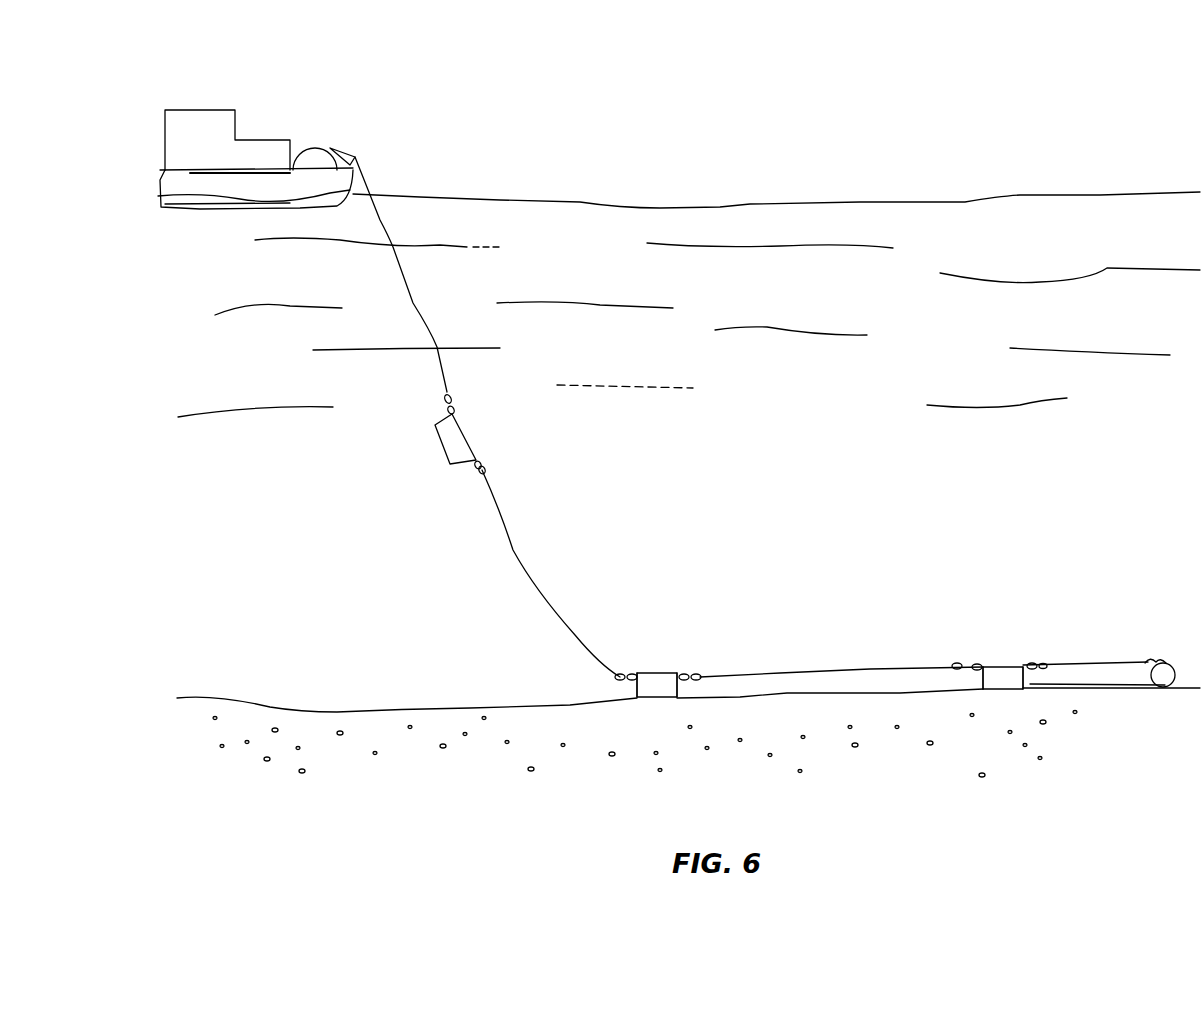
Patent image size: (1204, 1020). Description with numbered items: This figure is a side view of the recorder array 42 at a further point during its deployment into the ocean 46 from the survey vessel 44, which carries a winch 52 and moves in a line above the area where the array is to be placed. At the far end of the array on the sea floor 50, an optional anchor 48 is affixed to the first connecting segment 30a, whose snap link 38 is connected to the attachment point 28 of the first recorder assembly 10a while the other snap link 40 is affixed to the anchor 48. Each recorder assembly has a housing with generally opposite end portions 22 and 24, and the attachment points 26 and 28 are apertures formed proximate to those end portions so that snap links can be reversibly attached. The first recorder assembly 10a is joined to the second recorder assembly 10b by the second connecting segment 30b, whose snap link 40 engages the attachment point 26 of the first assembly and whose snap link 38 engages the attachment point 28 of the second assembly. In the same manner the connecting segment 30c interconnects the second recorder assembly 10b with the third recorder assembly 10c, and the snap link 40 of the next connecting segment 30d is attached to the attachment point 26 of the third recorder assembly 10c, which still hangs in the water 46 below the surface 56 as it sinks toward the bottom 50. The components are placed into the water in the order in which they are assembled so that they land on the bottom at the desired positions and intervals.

The first recorder assembly 10a is at (1003, 666).
The second recorder assembly 10b is at (655, 673).
The third recorder assembly 10c is at (458, 437).
The end portion 22 is at (636, 686).
The end portion 24 is at (680, 689).
The first attachment point 26 is at (452, 403).
The second attachment point 28 is at (485, 466).
The first connecting segment 30a is at (1105, 653).
The second connecting segment 30b is at (836, 655).
The connecting segment 30c is at (537, 551).
The connecting segment 30d is at (427, 301).
The snap link 38 is at (474, 471).
The snap link 40 is at (446, 410).
The recorder array 42 is at (735, 600).
The survey vessel 44 is at (205, 208).
The ocean 46 is at (845, 424).
The anchor 48 is at (1162, 688).
The sea floor 50 is at (423, 710).
The winch 52 is at (316, 166).
The surface 56 is at (750, 204).